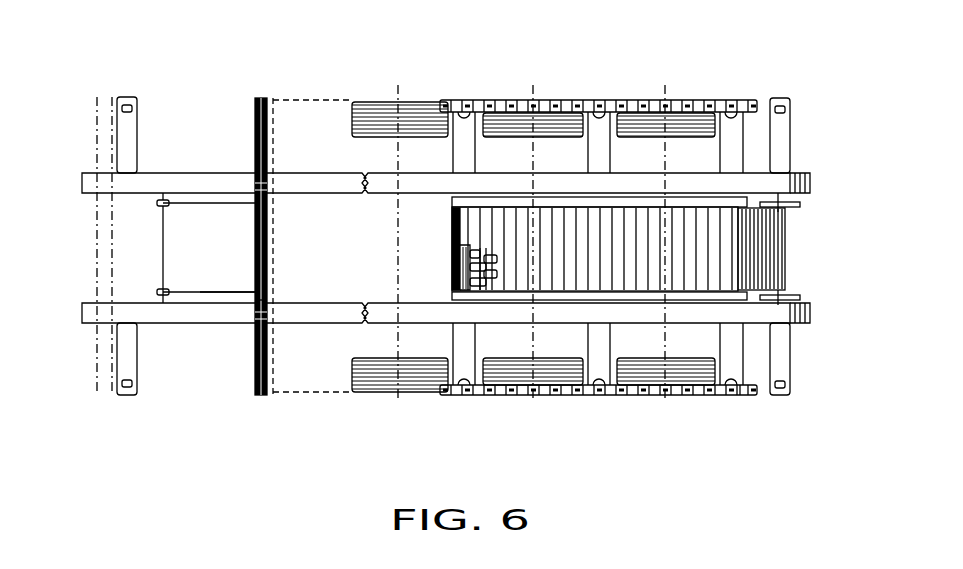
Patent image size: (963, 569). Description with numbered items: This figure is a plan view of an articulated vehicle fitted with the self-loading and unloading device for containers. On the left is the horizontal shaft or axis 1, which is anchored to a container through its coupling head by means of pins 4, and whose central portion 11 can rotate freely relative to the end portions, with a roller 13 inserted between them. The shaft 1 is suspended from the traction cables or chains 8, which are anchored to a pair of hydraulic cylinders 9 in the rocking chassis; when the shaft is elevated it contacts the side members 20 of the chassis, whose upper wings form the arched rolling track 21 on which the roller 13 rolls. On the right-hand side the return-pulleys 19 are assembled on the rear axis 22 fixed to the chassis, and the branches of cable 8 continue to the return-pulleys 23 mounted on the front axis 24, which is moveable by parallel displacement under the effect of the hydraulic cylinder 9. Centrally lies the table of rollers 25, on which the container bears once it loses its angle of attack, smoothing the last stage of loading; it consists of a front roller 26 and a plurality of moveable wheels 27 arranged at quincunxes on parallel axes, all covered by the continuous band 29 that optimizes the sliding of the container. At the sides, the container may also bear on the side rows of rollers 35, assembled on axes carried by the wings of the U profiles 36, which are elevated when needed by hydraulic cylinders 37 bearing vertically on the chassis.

The horizontal shaft or axis 1 is at (252, 142).
The pins 4 is at (253, 117).
The traction cables or chains 8 is at (236, 292).
The hydraulic cylinders 9 is at (642, 195).
The central portion 11 is at (253, 238).
The roller 13 is at (262, 308).
The return-pulleys 19 is at (790, 203).
The side members 20 is at (193, 323).
The rolling track 21 is at (182, 183).
The rear axis 22 is at (793, 300).
The return-pulleys 23 is at (158, 200).
The front axis 24 is at (160, 248).
The table of rollers 25 is at (687, 268).
The front roller 26 is at (455, 282).
The moveable wheels 27 is at (492, 292).
The continuous band 29 is at (553, 223).
The side rows of rollers 35 is at (730, 102).
The U profiles 36 is at (752, 395).
The hydraulic cylinders 37 is at (462, 98).